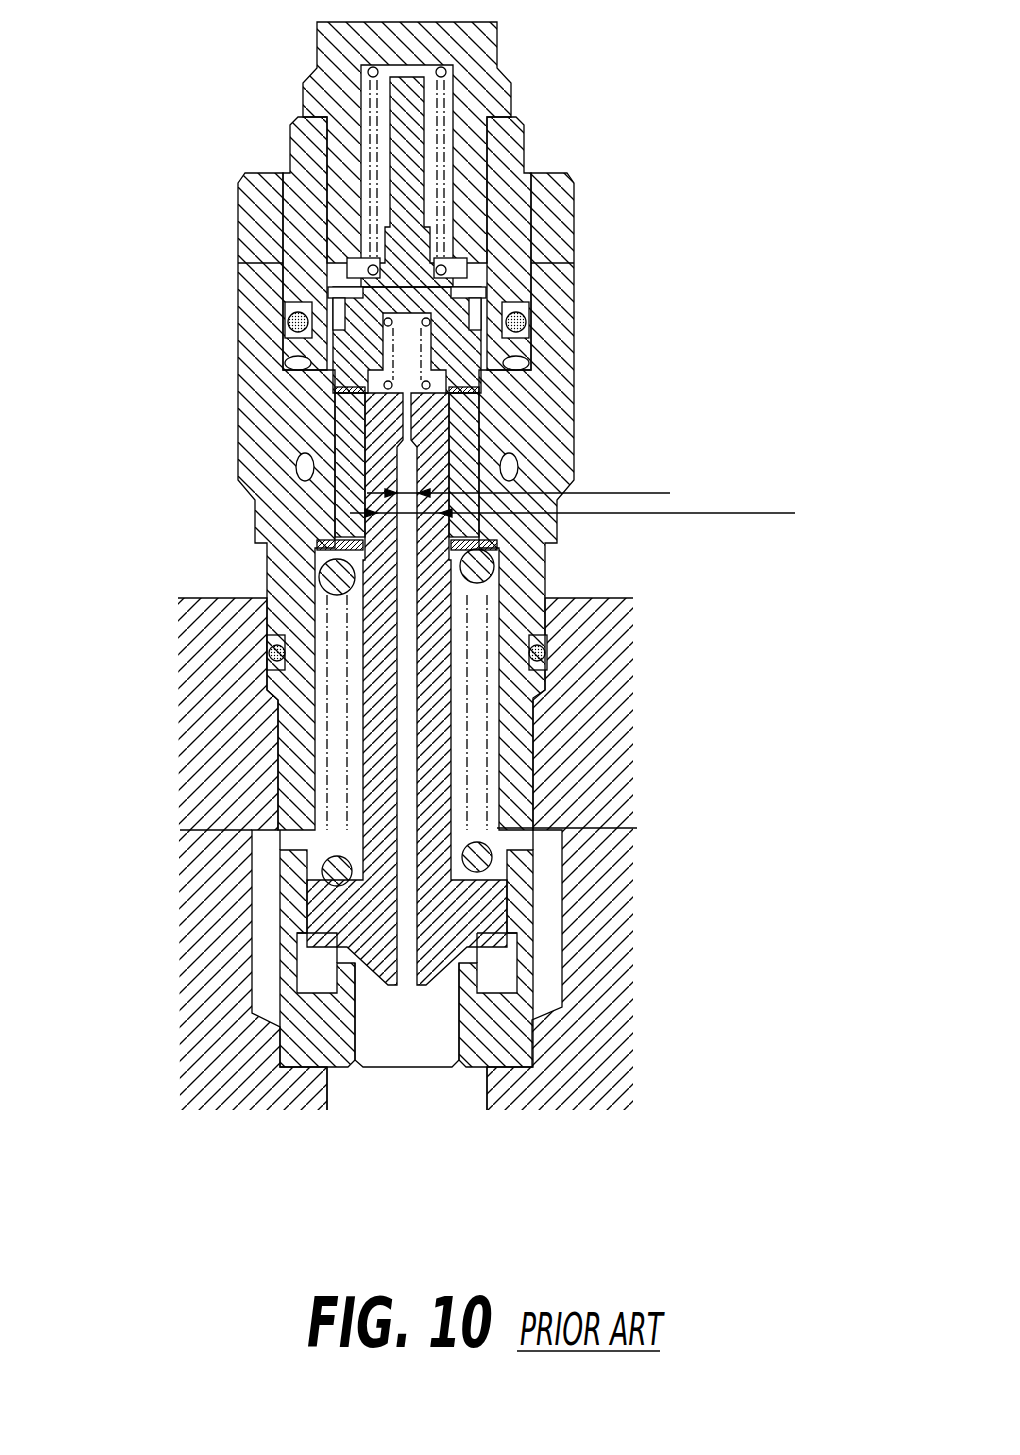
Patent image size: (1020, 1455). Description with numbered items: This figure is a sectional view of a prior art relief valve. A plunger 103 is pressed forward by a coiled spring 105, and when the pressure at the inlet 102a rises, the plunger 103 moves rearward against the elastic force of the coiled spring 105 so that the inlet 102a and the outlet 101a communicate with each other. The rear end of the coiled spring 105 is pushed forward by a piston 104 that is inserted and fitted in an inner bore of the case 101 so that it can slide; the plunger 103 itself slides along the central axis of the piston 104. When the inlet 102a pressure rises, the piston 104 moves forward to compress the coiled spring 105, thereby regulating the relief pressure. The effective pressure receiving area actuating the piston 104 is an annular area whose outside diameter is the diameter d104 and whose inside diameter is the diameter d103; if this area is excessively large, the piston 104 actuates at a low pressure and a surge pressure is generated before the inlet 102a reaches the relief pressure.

The case 101 is at (493, 445).
The outlet 101a is at (523, 962).
The inlet 102a is at (415, 1042).
The plunger 103 is at (430, 720).
The piston 104 is at (360, 457).
The coiled spring 105 is at (500, 862).
The diameter d103 is at (519, 476).
The diameter d104 is at (572, 497).